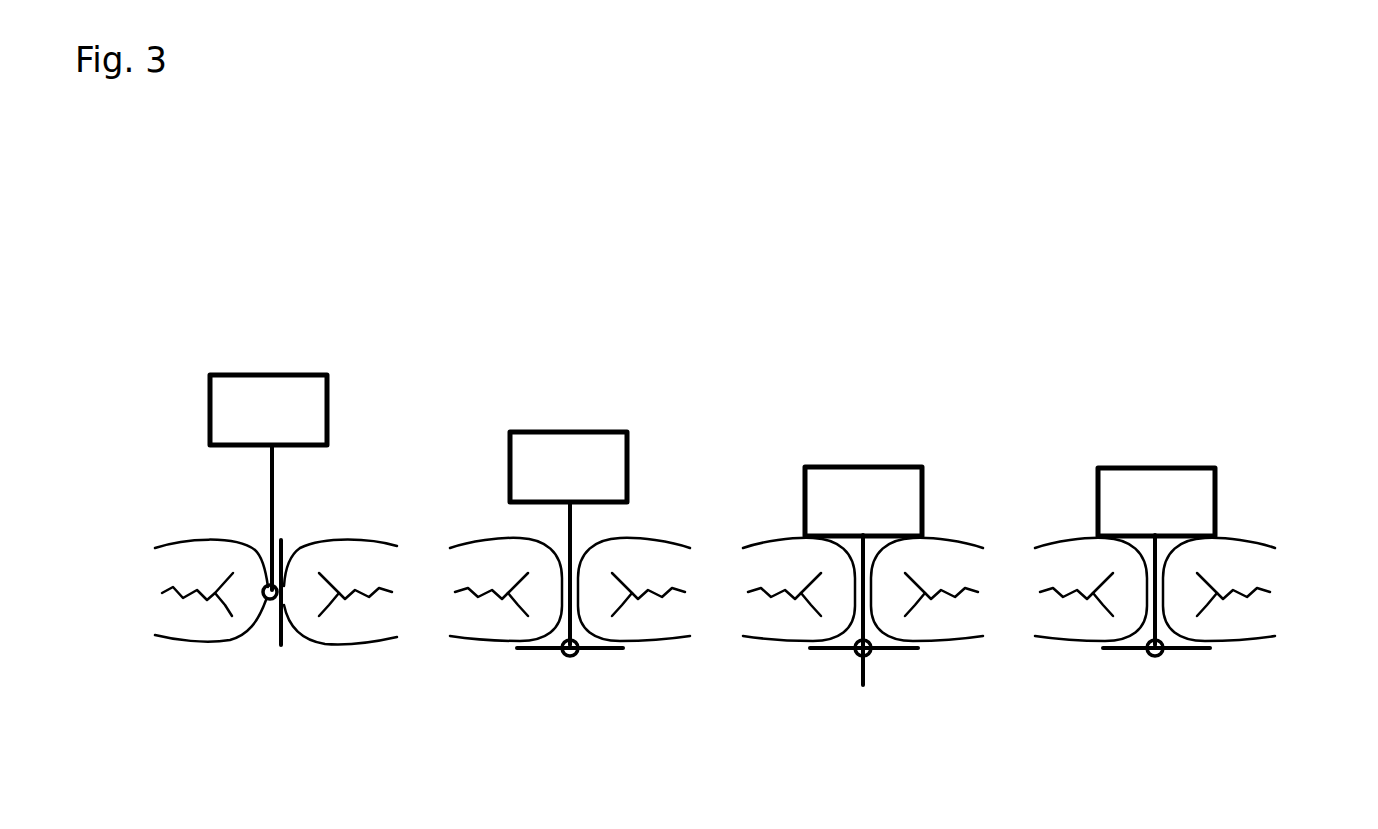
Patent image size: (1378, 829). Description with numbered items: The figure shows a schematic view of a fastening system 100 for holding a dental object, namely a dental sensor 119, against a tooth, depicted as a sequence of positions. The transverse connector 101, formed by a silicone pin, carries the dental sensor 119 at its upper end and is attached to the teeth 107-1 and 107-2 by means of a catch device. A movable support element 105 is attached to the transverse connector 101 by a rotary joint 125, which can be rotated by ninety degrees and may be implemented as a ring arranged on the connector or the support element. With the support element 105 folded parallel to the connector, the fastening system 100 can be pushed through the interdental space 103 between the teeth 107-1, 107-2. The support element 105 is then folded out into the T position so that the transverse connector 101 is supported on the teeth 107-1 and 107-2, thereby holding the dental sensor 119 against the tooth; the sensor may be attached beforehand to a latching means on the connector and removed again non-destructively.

The fastening system 100 is at (332, 300).
The transverse connector 101 is at (270, 483).
The interdental space 103 is at (287, 543).
The support element 105 is at (280, 650).
The tooth 107-1 is at (187, 565).
The tooth 107-2 is at (340, 562).
The dental sensor 119 is at (263, 388).
The rotary joint 125 is at (264, 597).